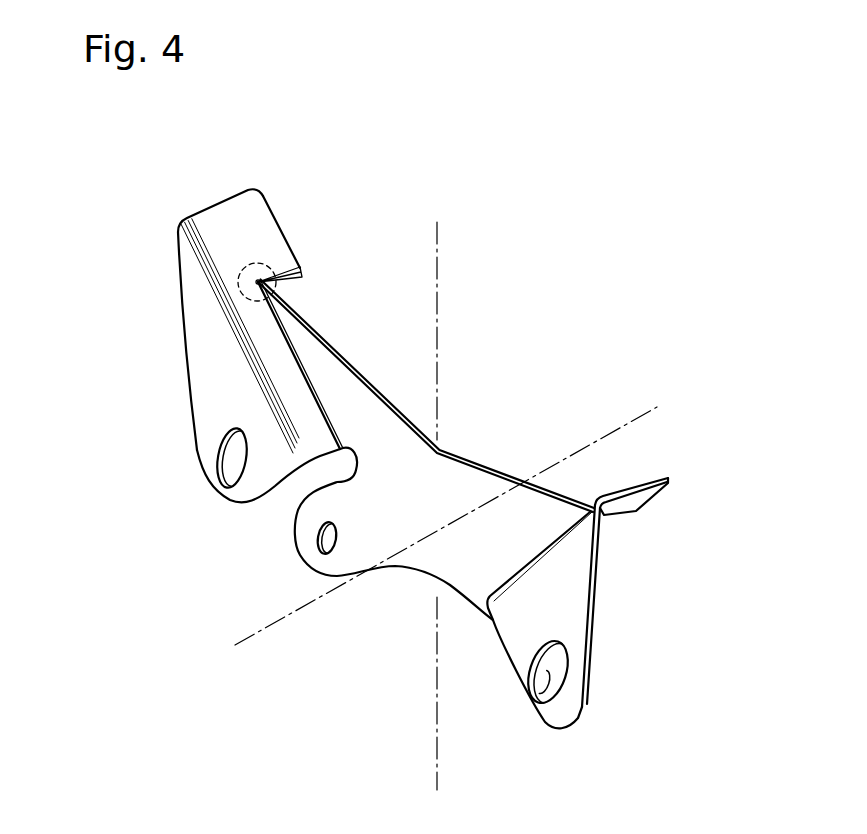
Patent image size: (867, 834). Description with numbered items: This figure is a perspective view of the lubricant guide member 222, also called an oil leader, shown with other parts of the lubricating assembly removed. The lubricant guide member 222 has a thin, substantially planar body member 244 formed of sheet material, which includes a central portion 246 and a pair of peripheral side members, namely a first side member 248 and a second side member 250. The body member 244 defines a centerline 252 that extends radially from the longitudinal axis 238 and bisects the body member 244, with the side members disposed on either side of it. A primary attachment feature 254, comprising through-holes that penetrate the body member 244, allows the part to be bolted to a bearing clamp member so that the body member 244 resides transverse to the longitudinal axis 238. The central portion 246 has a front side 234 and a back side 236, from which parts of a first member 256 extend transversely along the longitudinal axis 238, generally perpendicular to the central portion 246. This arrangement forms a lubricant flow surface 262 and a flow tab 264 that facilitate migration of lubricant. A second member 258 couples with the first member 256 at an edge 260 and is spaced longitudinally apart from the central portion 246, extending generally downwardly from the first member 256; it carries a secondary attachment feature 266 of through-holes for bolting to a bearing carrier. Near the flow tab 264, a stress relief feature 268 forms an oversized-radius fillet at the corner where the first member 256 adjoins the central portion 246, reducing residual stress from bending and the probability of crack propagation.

The lubricant guide member 222 is at (560, 193).
The front side 234 is at (475, 365).
The back side 236 is at (122, 560).
The longitudinal axis 238 is at (290, 615).
The body member 244 is at (472, 578).
The central portion 246 is at (363, 630).
The first side member 248 is at (662, 452).
The second side member 250 is at (236, 185).
The centerline 252 is at (434, 300).
The primary attachment feature 254 is at (305, 550).
The first member 256 is at (232, 226).
The second member 258 is at (207, 365).
The edge 260 is at (215, 292).
The lubricant flow surface 262 is at (262, 222).
The flow tab 264 is at (300, 272).
The secondary attachment feature 266 is at (228, 465).
The stress relief feature 268 is at (270, 262).